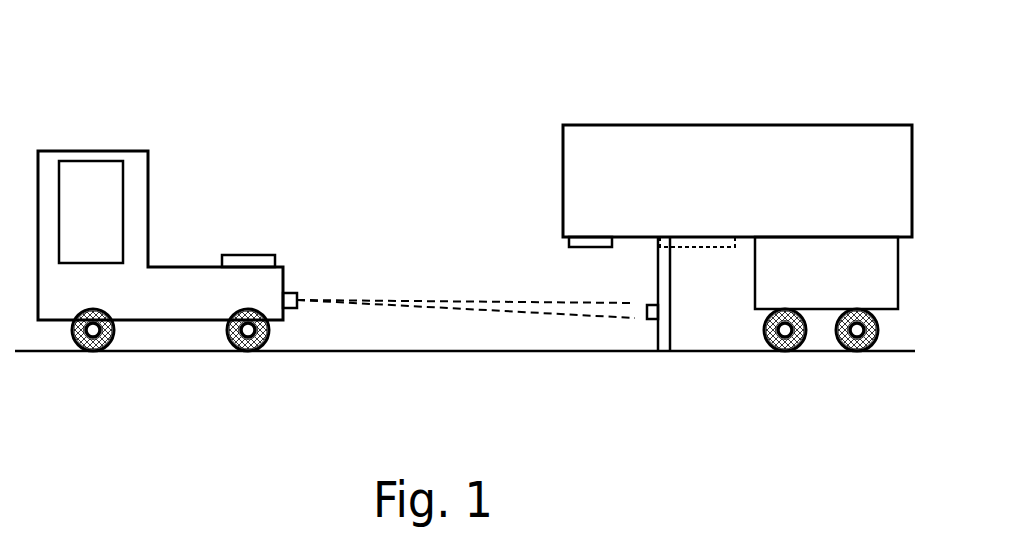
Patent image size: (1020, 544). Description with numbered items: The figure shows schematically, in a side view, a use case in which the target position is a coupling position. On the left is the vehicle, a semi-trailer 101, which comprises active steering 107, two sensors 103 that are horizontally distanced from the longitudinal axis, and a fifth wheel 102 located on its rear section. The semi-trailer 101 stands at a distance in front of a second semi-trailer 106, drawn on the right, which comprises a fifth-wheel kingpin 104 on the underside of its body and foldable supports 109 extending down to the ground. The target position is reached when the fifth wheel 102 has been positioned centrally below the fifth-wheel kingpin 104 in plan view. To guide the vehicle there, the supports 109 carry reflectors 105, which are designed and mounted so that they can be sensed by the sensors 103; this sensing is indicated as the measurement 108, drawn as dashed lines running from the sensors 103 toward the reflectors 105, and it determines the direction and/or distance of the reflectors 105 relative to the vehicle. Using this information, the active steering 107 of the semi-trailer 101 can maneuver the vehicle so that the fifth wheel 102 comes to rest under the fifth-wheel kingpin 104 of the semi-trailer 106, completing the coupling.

The semi-trailer 101 is at (94, 151).
The fifth wheel 102 is at (252, 255).
The sensors 103 is at (297, 305).
The fifth-wheel kingpin 104 is at (593, 247).
The reflectors 105 is at (653, 319).
The semi-trailer 106 is at (738, 125).
The active steering 107 is at (95, 348).
The measurement 108 is at (449, 310).
The foldable supports 109 is at (672, 295).